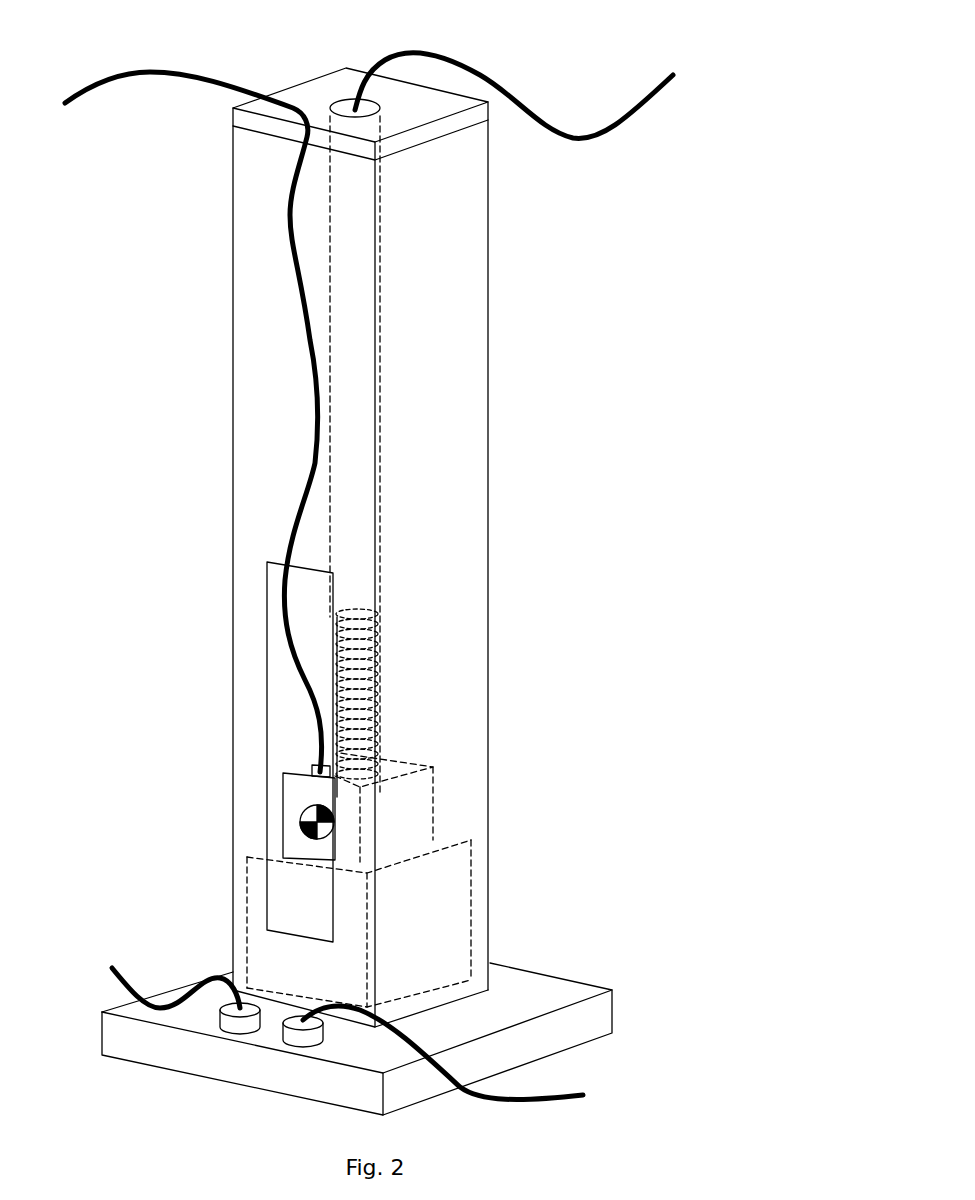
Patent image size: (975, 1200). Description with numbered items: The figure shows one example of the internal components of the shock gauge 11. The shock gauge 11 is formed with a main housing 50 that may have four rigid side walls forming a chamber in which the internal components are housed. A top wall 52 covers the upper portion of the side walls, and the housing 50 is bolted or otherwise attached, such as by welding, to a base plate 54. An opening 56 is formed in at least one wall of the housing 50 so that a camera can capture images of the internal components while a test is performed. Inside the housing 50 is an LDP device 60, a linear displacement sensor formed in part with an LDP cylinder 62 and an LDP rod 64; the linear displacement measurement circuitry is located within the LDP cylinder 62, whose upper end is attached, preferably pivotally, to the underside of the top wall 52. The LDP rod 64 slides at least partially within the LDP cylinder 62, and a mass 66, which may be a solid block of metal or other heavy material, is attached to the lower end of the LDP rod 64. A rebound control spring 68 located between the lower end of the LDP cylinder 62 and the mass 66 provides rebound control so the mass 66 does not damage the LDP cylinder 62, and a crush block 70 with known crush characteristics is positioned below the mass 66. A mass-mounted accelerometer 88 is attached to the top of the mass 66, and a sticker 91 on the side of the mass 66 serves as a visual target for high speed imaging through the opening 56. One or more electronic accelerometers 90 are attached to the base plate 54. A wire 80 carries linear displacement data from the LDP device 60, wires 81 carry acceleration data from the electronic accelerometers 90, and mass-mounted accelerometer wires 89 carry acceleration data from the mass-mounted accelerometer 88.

The shock gauge 11 is at (258, 318).
The main housing 50 is at (467, 573).
The top wall 52 is at (297, 102).
The base plate 54 is at (553, 990).
The opening 56 is at (290, 682).
The LDP device 60 is at (393, 382).
The LDP cylinder 62 is at (358, 493).
The LDP rod 64 is at (338, 615).
The mass 66 is at (413, 795).
The rebound control spring 68 is at (367, 688).
The crush block 70 is at (463, 885).
The wire 80 is at (612, 133).
The wires 81 is at (112, 983).
The mass-mounted accelerometer 88 is at (316, 773).
The mass-mounted accelerometer wires 89 is at (170, 78).
The electronic accelerometers 90 is at (290, 1037).
The sticker 91 is at (300, 822).